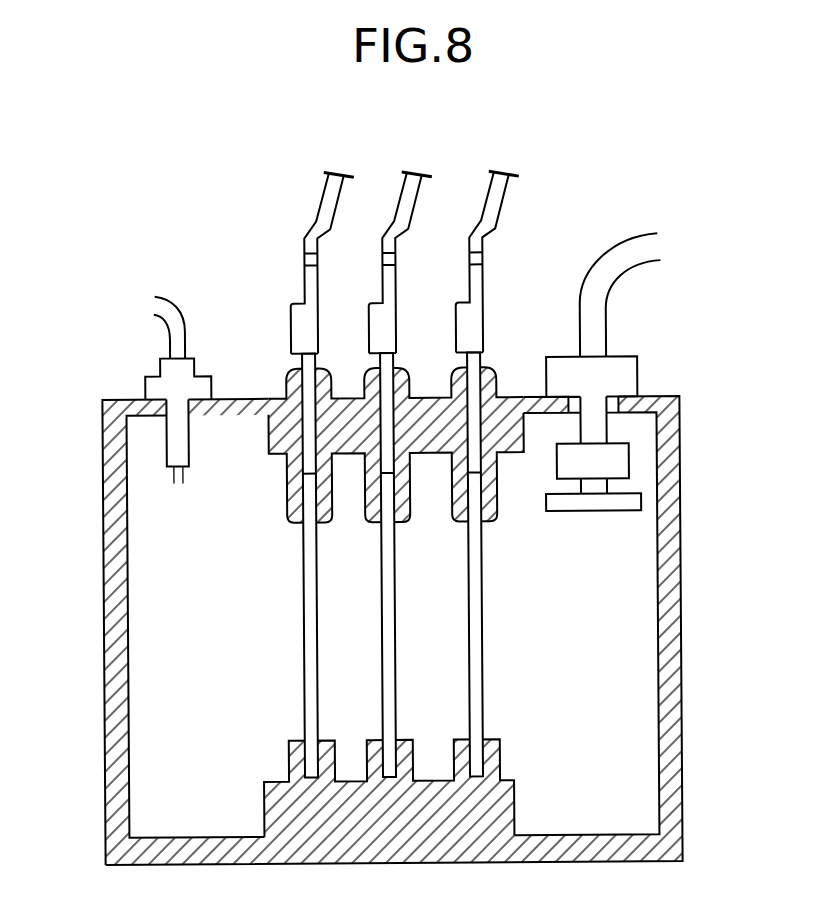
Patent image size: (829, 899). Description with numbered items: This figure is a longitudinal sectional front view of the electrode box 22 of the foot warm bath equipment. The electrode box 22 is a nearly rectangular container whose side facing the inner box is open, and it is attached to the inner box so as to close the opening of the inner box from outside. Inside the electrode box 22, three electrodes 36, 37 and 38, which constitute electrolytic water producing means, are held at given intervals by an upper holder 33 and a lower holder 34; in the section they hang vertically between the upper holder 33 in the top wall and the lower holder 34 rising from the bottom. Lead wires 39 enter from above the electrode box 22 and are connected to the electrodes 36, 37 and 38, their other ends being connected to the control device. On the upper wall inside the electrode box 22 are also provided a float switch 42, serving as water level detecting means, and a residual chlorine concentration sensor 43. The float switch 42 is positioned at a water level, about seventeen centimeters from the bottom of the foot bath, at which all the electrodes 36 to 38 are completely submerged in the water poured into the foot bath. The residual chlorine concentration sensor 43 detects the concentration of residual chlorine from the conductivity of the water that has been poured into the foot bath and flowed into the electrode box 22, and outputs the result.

The electrode box 22 is at (682, 637).
The upper holder 33 is at (275, 456).
The lower holder 34 is at (263, 798).
The electrode 36 is at (304, 634).
The electrode 37 is at (395, 630).
The electrode 38 is at (482, 632).
The lead wires 39 is at (308, 258).
The float switch 42 is at (633, 490).
The residual chlorine concentration sensor 43 is at (168, 445).